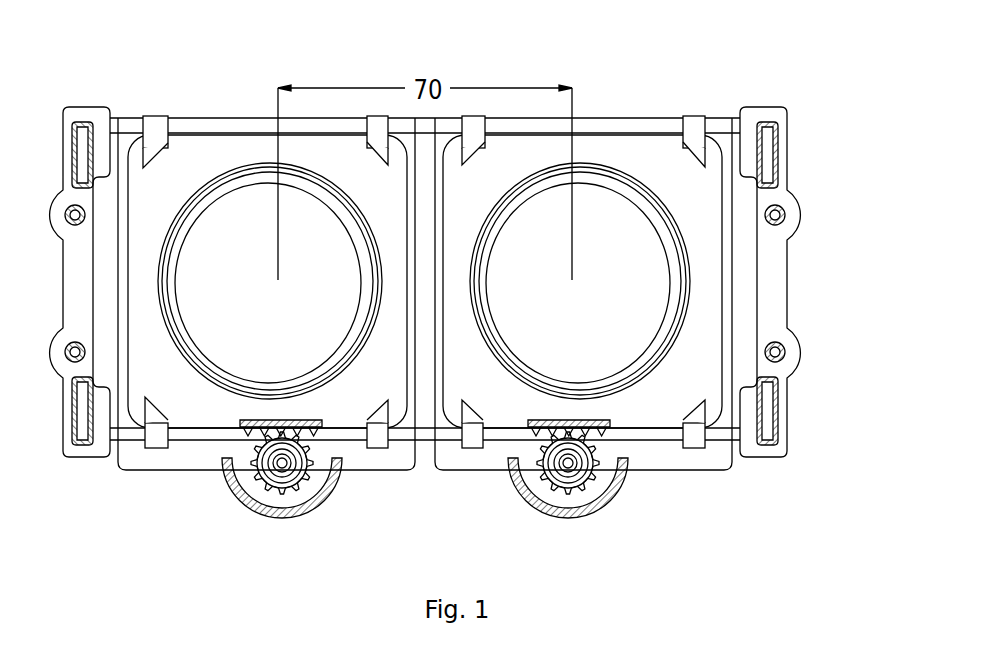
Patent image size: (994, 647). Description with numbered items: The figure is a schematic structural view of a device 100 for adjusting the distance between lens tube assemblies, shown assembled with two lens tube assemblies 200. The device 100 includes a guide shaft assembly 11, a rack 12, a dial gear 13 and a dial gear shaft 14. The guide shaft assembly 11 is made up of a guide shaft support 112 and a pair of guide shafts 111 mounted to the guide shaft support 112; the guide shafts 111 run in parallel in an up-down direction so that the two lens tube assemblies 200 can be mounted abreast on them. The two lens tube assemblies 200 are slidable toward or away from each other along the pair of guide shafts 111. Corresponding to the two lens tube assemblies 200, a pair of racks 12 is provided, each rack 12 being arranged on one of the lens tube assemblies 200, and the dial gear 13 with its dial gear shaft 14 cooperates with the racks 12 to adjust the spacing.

The guide shaft assembly 11 is at (808, 48).
The guide shafts 111 is at (625, 135).
The guide shaft support 112 is at (757, 133).
The rack 12 is at (600, 427).
The dial gear 13 is at (577, 500).
The dial gear shaft 14 is at (540, 468).
The device for adjusting the distance between the lens tube assemblies 100 is at (247, 480).
The lens tube assemblies 200 is at (555, 373).